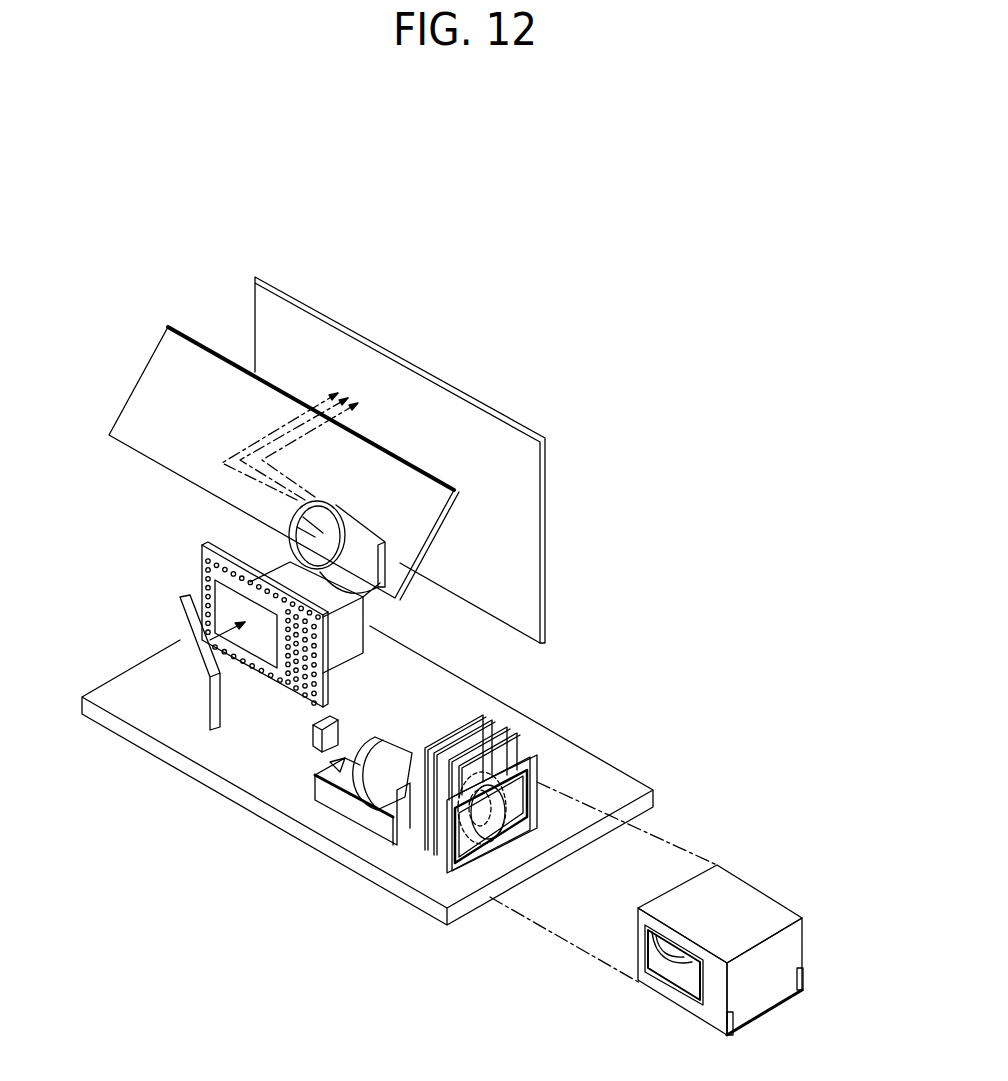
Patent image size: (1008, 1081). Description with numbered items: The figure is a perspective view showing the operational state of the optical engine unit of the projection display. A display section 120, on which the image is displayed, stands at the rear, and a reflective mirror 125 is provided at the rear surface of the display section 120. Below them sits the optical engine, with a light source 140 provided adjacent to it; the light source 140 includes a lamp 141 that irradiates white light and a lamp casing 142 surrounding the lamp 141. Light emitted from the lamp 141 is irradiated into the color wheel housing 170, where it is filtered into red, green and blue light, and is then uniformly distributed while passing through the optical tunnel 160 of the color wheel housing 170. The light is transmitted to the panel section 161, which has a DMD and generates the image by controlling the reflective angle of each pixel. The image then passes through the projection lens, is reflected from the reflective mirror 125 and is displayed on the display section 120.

The display section 120 is at (262, 315).
The reflective mirror 125 is at (160, 363).
The light source 140 is at (760, 910).
The lamp 141 is at (687, 960).
The lamp casing 142 is at (777, 920).
The optical tunnel 160 is at (347, 787).
The panel section 161 is at (198, 682).
The color wheel housing 170 is at (430, 868).